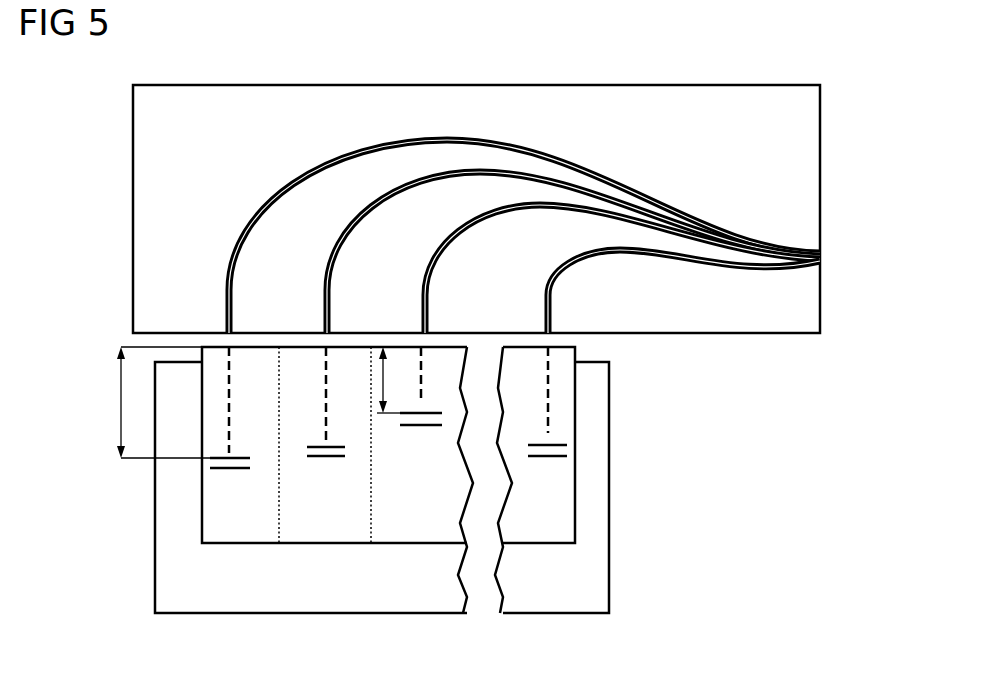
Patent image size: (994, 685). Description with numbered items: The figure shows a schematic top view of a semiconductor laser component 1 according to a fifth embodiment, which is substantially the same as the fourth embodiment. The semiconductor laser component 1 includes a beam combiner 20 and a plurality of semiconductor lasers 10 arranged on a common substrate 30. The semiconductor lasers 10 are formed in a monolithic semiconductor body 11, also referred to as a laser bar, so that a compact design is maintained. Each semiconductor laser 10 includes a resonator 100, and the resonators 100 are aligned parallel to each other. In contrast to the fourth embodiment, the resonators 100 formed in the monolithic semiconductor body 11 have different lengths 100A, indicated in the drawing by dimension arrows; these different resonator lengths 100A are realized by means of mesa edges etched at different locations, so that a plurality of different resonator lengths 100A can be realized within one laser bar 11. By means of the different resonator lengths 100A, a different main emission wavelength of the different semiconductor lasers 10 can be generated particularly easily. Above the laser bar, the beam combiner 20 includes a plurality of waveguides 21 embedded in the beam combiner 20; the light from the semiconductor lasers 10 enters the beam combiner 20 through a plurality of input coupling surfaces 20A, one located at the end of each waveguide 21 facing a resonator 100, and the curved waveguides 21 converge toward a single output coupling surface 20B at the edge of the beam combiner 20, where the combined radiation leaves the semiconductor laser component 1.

The semiconductor laser component 1 is at (810, 73).
The beam combiner 20 is at (810, 163).
The input coupling surfaces 20A is at (238, 322).
The output coupling surface 20B is at (835, 255).
The waveguides 21 is at (345, 245).
The resonator 100 is at (232, 380).
The resonator length 100A is at (121, 410).
The semiconductor laser 10 is at (247, 535).
The monolithic semiconductor body 11 is at (557, 510).
The substrate 30 is at (593, 577).